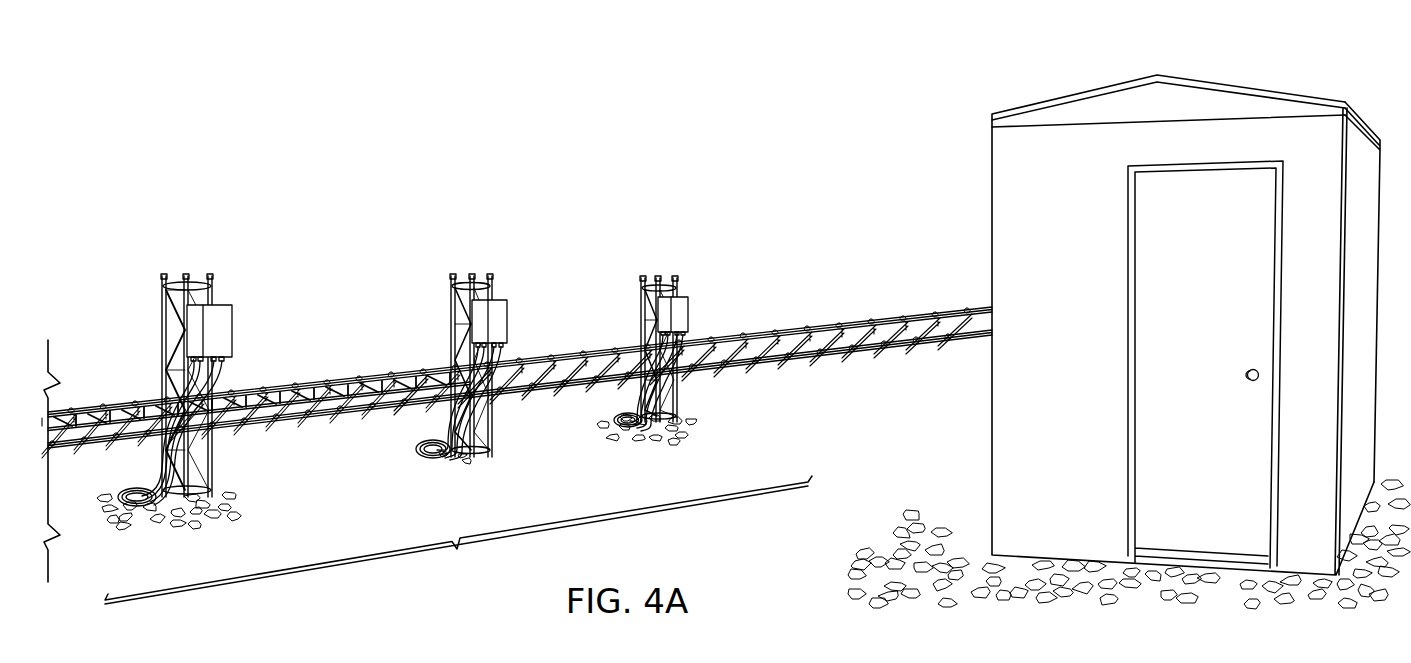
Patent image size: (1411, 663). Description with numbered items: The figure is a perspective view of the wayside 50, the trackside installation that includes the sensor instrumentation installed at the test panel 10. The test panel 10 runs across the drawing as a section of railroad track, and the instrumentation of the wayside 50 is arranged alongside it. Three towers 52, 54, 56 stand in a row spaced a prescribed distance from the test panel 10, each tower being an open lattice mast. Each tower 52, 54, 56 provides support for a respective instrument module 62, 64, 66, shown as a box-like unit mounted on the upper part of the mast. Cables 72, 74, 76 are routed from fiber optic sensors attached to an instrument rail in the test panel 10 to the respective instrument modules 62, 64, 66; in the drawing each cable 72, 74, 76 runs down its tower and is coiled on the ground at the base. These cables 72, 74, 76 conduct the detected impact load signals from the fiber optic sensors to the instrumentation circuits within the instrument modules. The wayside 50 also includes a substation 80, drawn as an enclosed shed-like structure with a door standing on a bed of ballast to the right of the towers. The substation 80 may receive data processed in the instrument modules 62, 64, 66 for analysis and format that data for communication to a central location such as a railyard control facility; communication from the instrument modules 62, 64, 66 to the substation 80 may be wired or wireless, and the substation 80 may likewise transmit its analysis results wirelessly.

The test panel 10 is at (517, 455).
The wayside 50 is at (350, 86).
The tower 52 is at (213, 458).
The tower 54 is at (492, 438).
The tower 56 is at (677, 402).
The instrument module 62 is at (219, 303).
The instrument module 64 is at (497, 300).
The instrument module 66 is at (681, 297).
The cable 72 is at (125, 516).
The cable 74 is at (416, 444).
The cable 76 is at (627, 441).
The substation 80 is at (990, 438).